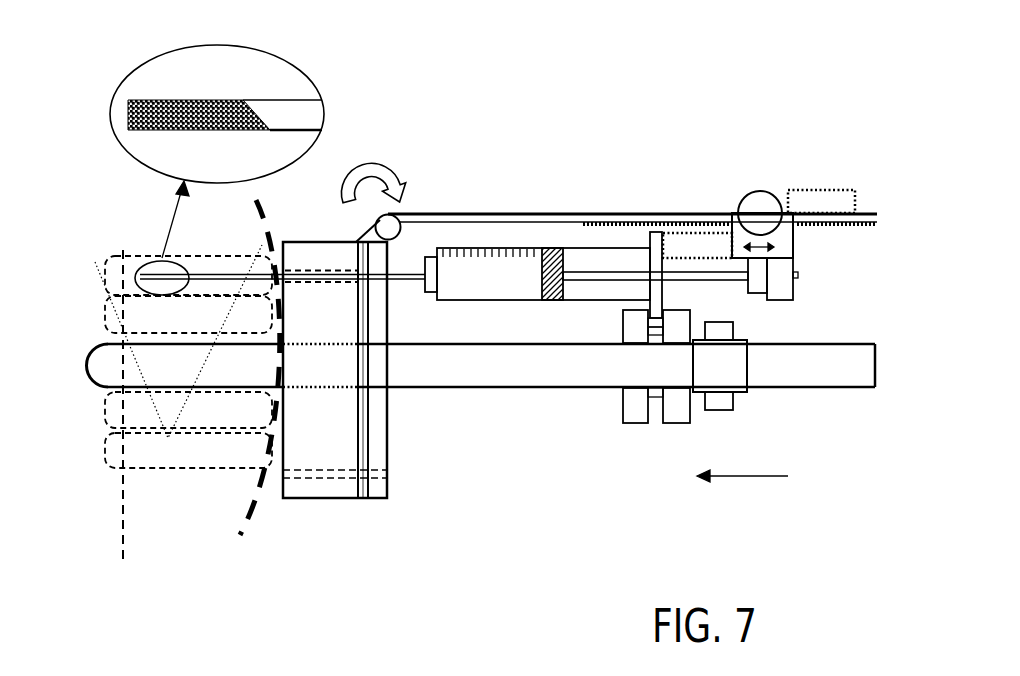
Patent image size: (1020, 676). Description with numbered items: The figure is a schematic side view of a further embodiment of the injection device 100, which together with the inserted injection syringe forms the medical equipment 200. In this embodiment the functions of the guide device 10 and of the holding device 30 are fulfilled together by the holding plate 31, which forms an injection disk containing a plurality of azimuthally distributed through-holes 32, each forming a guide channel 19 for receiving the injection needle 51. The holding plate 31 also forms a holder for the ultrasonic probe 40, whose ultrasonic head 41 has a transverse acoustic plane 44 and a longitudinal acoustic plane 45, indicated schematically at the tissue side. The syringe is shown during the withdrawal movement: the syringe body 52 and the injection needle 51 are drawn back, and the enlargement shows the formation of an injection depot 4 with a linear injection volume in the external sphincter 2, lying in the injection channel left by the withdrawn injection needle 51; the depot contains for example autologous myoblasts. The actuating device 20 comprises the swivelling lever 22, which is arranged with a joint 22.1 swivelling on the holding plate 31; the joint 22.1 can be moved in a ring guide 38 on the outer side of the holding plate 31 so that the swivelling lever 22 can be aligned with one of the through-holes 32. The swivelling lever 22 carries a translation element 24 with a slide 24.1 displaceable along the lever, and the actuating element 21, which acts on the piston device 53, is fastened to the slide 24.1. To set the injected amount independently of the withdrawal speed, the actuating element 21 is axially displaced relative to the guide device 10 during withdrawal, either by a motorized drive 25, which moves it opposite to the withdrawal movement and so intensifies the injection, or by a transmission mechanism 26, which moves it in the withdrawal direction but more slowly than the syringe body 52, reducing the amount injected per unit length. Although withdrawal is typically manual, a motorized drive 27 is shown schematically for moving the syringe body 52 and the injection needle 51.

The external sphincter 2 is at (152, 82).
The injection depot 4 is at (177, 107).
The injection needle 51 is at (297, 110).
The injection device 100 is at (431, 145).
The medical equipment 200 is at (745, 133).
The swivelling lever 22 is at (493, 220).
The joint 22.1 is at (402, 215).
The syringe body 52 is at (470, 272).
The piston device 53 is at (613, 273).
The transmission mechanism 26 is at (673, 247).
The translation element 24 is at (755, 208).
The motorized drive 25 is at (822, 189).
The actuating device 20 is at (865, 264).
The slide 24.1 is at (783, 240).
The actuating element 21 is at (783, 277).
The motorized drive 27 is at (677, 410).
The holding plate 31 is at (328, 347).
The guide device 10 is at (335, 370).
The holding device 30 is at (352, 442).
The guide channel 19 is at (366, 506).
The through-holes 32 is at (310, 472).
The ring guide 38 is at (370, 412).
The ultrasonic probe 40 is at (465, 346).
The ultrasonic head 41 is at (110, 367).
The transverse acoustic plane 44 is at (123, 535).
The longitudinal acoustic plane 45 is at (95, 262).